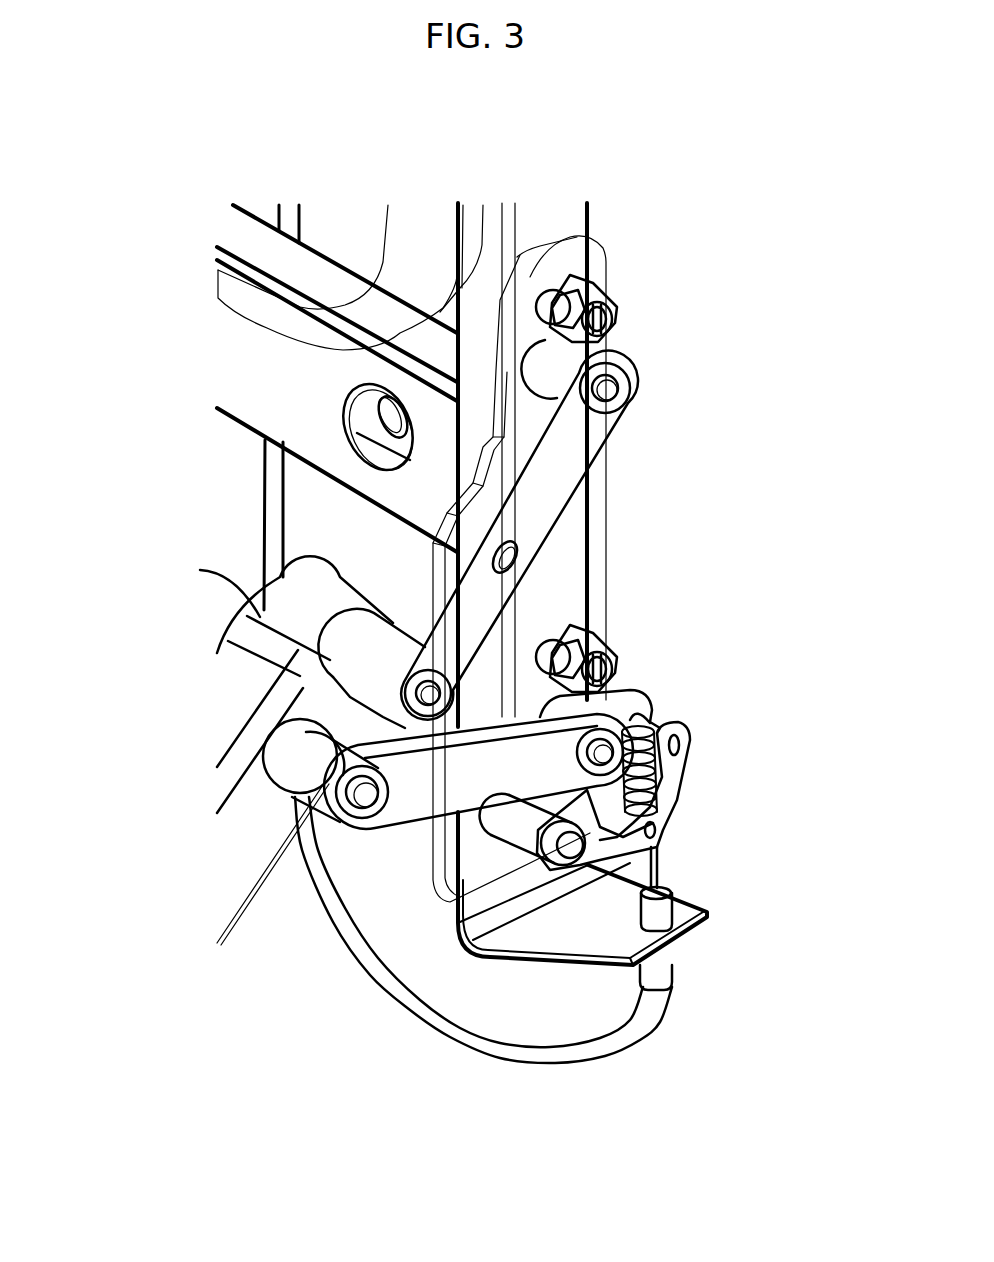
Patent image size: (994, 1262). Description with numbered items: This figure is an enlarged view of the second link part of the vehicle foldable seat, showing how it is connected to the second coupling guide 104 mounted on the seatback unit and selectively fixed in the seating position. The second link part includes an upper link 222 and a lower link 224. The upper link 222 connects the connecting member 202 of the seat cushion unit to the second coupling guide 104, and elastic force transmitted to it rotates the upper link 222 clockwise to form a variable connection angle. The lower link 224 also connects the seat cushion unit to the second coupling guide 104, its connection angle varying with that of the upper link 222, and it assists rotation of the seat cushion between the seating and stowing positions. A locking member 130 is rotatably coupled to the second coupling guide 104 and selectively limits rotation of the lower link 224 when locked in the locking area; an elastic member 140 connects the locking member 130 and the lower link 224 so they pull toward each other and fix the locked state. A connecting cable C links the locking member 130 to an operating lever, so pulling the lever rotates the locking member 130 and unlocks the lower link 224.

The second coupling guide 104 is at (541, 597).
The connecting member 202 is at (262, 612).
The upper link 222 is at (562, 452).
The lower link 224 is at (407, 803).
The elastic member 140 is at (667, 783).
The locking member 130 is at (663, 813).
The connecting cable C is at (632, 1038).